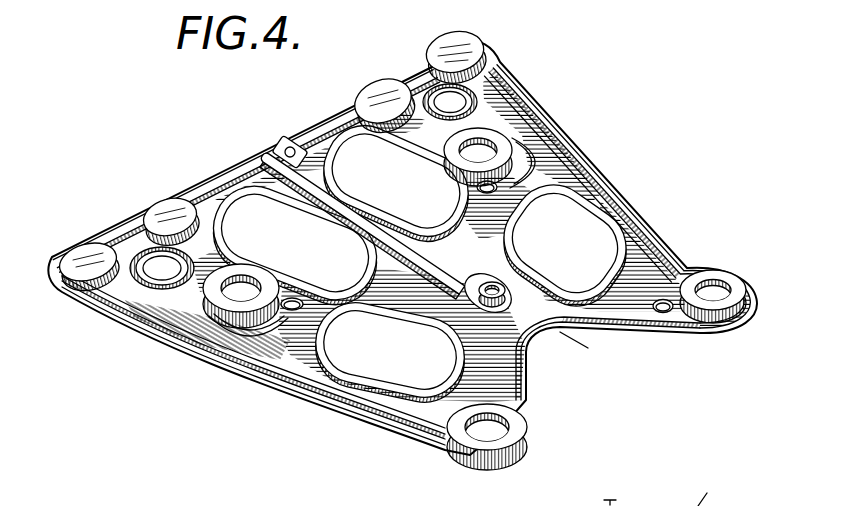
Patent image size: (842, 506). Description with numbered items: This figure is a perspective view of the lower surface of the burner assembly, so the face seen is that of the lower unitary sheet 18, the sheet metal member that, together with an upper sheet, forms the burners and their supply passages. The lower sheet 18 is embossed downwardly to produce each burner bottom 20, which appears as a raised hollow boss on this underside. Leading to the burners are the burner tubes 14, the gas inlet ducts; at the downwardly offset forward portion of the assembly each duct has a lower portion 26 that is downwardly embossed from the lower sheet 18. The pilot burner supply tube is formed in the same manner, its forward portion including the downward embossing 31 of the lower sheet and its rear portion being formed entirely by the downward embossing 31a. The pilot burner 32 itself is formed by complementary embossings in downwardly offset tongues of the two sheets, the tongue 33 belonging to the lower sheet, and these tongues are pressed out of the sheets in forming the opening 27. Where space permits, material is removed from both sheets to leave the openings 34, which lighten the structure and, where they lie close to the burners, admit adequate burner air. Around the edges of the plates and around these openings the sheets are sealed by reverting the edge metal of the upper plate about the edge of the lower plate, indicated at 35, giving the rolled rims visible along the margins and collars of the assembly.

The burner tube 14 is at (437, 45).
The lower unitary sheet 18 is at (503, 267).
The burner bottom 20 is at (535, 125).
The lower portion of the duct 26 is at (494, 80).
The opening 27 is at (453, 297).
The lower embossing of pilot supply tube 31 is at (253, 156).
The rear embossing of pilot supply tube 31a is at (438, 270).
The pilot burner 32 is at (505, 287).
The lower sheet tongue 33 is at (487, 314).
The openings 34 is at (143, 371).
The reverted edge seal 35 is at (345, 128).